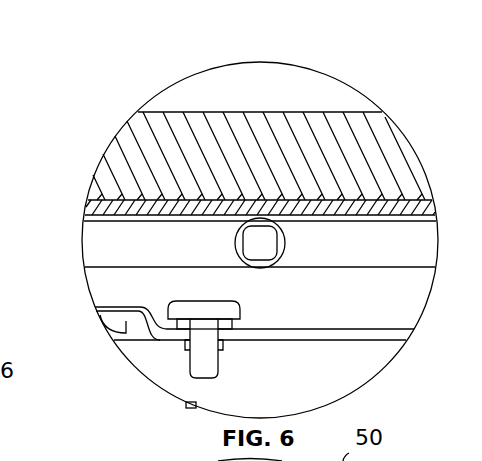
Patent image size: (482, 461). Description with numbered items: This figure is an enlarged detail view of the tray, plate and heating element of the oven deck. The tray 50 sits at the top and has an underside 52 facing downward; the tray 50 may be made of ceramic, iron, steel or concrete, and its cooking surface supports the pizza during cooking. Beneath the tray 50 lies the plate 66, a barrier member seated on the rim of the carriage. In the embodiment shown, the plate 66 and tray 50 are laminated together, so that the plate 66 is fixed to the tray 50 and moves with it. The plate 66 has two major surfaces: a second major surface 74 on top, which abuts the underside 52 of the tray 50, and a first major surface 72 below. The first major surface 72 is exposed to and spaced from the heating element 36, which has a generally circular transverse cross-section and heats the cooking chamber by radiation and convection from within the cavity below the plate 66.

The tray 50 is at (306, 147).
The underside 52 is at (116, 199).
The plate 66 is at (100, 209).
The second major surface 74 is at (422, 200).
The first major surface 72 is at (113, 221).
The heating element 36 is at (408, 250).